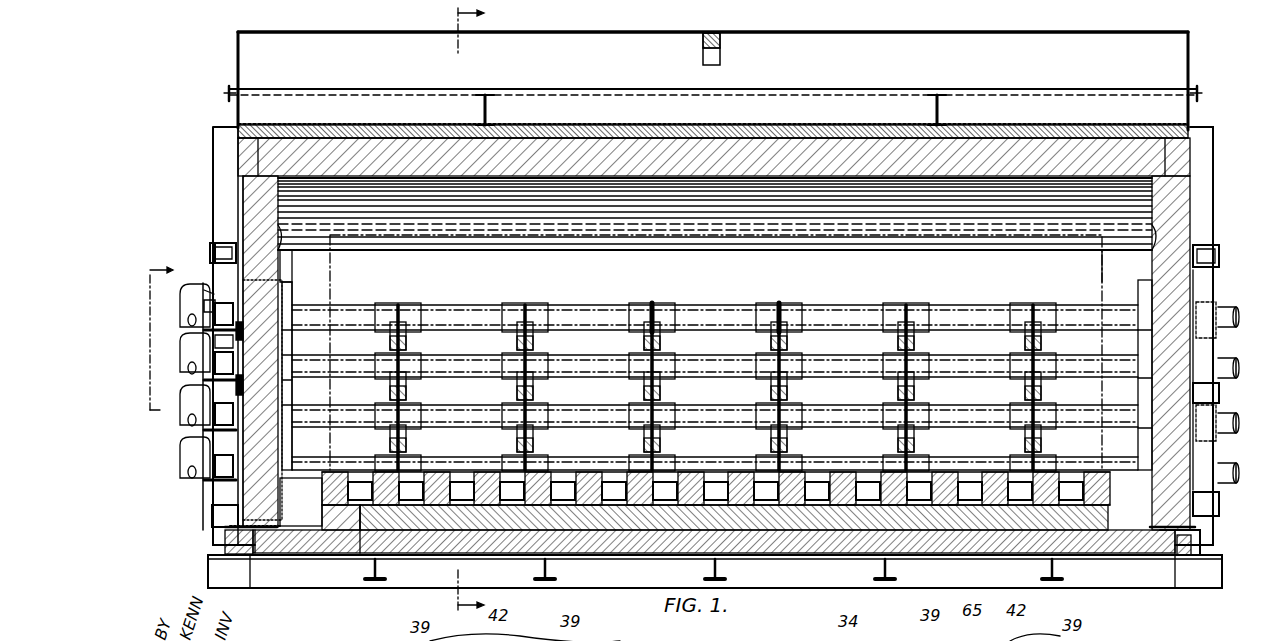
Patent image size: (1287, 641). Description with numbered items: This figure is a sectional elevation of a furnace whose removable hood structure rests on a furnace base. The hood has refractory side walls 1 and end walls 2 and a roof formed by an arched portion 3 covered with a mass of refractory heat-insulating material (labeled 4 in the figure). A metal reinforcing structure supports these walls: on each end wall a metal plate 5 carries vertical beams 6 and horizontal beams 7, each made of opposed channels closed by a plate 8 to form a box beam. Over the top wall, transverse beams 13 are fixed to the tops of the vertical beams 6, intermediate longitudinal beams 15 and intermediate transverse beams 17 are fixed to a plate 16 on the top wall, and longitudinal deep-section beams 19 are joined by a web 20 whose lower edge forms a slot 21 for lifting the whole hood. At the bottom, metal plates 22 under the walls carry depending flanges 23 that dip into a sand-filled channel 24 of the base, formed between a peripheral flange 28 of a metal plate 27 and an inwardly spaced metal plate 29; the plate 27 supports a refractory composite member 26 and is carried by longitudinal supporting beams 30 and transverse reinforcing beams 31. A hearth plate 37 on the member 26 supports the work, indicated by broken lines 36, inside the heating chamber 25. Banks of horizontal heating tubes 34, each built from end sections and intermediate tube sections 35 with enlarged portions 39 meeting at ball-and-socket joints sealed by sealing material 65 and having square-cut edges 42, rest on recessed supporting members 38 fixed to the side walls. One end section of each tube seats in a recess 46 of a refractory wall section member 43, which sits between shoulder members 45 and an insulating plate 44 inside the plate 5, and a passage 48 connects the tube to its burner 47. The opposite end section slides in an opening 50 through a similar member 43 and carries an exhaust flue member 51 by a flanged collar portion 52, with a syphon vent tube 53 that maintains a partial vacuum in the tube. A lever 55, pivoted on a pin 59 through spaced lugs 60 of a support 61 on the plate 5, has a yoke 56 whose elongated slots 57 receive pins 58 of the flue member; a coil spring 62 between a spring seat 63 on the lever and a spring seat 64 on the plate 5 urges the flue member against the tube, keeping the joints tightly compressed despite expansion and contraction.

The side walls 1 is at (850, 215).
The end walls 2 is at (300, 188).
The arched portion 3 is at (690, 183).
The insulating layer / section line 4- 4 is at (805, 128).
The metal plate 5 is at (248, 175).
The vertical beams 6 is at (215, 150).
The horizontal beams 7 is at (212, 243).
The plate 8 is at (212, 252).
The transverse beams 13 is at (226, 93).
The intermediate longitudinal beams 15 is at (626, 98).
The plate 16 is at (315, 125).
The intermediate transverse beams 17 is at (487, 108).
The longitudinal deep-section beams 19 is at (888, 45).
The web 20 is at (722, 36).
The slot 21 is at (702, 58).
The metal plates 22 is at (228, 535).
The depending flanges 23 is at (236, 557).
The channel 24 is at (256, 586).
The heating chamber 25 is at (520, 208).
The composite member 26 is at (648, 556).
The metal plate 27 is at (800, 555).
The peripheral flange 28 is at (228, 545).
The metal plate 29 is at (272, 558).
The longitudinal supporting beams 30 is at (410, 578).
The transverse reinforcing beams 31 is at (540, 572).
The heating tubes 34 is at (350, 304).
The intermediate tube sections 35 is at (445, 304).
The broken lines 36 is at (745, 235).
The hearth plate 37 is at (698, 470).
The supporting members 38 is at (515, 340).
The enlarged portion 39 is at (519, 304).
The square-cut edges 42 is at (654, 304).
The wall section member 43 is at (1160, 262).
The plate 44 is at (320, 214).
The shoulder members 45 is at (290, 293).
The recess 46 is at (1136, 292).
The burner 47 is at (1238, 312).
The passage 48 is at (1212, 300).
The opening 50 is at (284, 270).
The exhaust flue member 51 is at (184, 290).
The flanged collar portion 52 is at (222, 302).
The syphon vent tube 53 is at (188, 322).
The lever 55 is at (203, 352).
The yoke 56 is at (204, 306).
The elongated slots 57 is at (204, 300).
The pins 58 is at (206, 280).
The pin 59 is at (204, 332).
The spaced lugs 60 is at (245, 334).
The support 61 is at (293, 345).
The coil spring 62 is at (251, 388).
The spring seat 63 is at (215, 362).
The spring seat 64 is at (293, 388).
The sealing material 65 is at (782, 304).